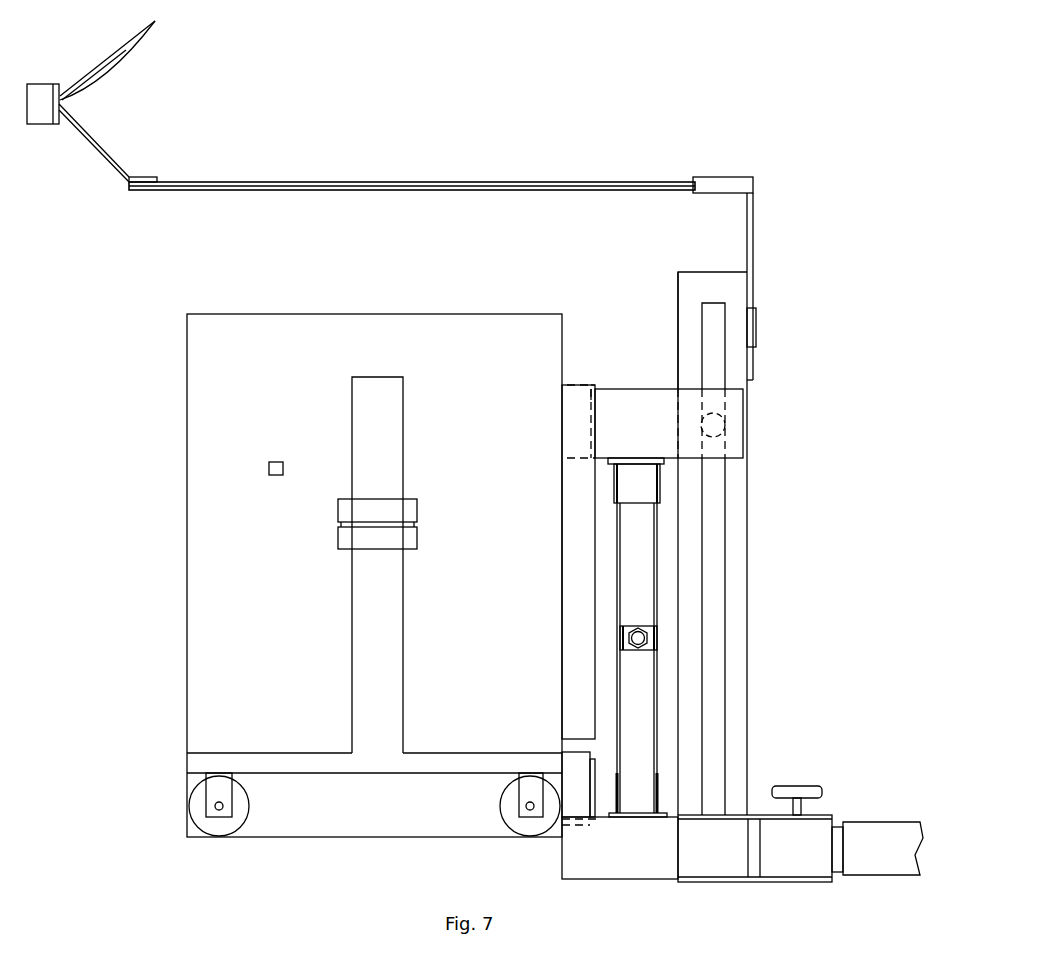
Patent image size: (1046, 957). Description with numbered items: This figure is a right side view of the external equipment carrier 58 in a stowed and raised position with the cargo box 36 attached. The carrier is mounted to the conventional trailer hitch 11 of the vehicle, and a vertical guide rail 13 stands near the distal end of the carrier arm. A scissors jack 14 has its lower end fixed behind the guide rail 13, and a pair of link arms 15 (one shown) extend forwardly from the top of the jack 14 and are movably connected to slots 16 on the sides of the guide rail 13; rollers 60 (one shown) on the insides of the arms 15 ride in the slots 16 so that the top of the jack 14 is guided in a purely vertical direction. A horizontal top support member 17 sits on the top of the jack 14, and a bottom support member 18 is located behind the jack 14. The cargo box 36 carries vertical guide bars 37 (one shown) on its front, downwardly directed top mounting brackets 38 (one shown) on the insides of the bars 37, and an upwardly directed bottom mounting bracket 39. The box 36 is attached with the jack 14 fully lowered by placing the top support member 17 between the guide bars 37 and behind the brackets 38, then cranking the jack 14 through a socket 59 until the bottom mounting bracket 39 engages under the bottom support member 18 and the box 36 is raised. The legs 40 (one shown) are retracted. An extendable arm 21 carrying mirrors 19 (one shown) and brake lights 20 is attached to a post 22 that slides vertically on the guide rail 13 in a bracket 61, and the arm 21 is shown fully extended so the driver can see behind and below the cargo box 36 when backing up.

The trailer hitch 11 is at (885, 820).
The vertical guide rail 13 is at (750, 660).
The scissors jack 14 is at (639, 805).
The link arms 15 is at (642, 387).
The slots 16 is at (724, 579).
The top support member 17 is at (573, 421).
The bottom support member 18 is at (574, 762).
The mirrors 19 is at (128, 55).
The brake lights 20 is at (40, 124).
The extendable arm 21 is at (429, 181).
The post 22 is at (754, 234).
The cargo box 36 is at (186, 613).
The vertical guide bars 37 is at (572, 548).
The top mounting brackets 38 is at (590, 396).
The bottom mounting bracket 39 is at (597, 800).
The legs 40 is at (381, 765).
The external equipment carrier 58 is at (752, 540).
The socket 59 is at (640, 652).
The rollers 60 is at (720, 426).
The bracket 61 is at (757, 327).